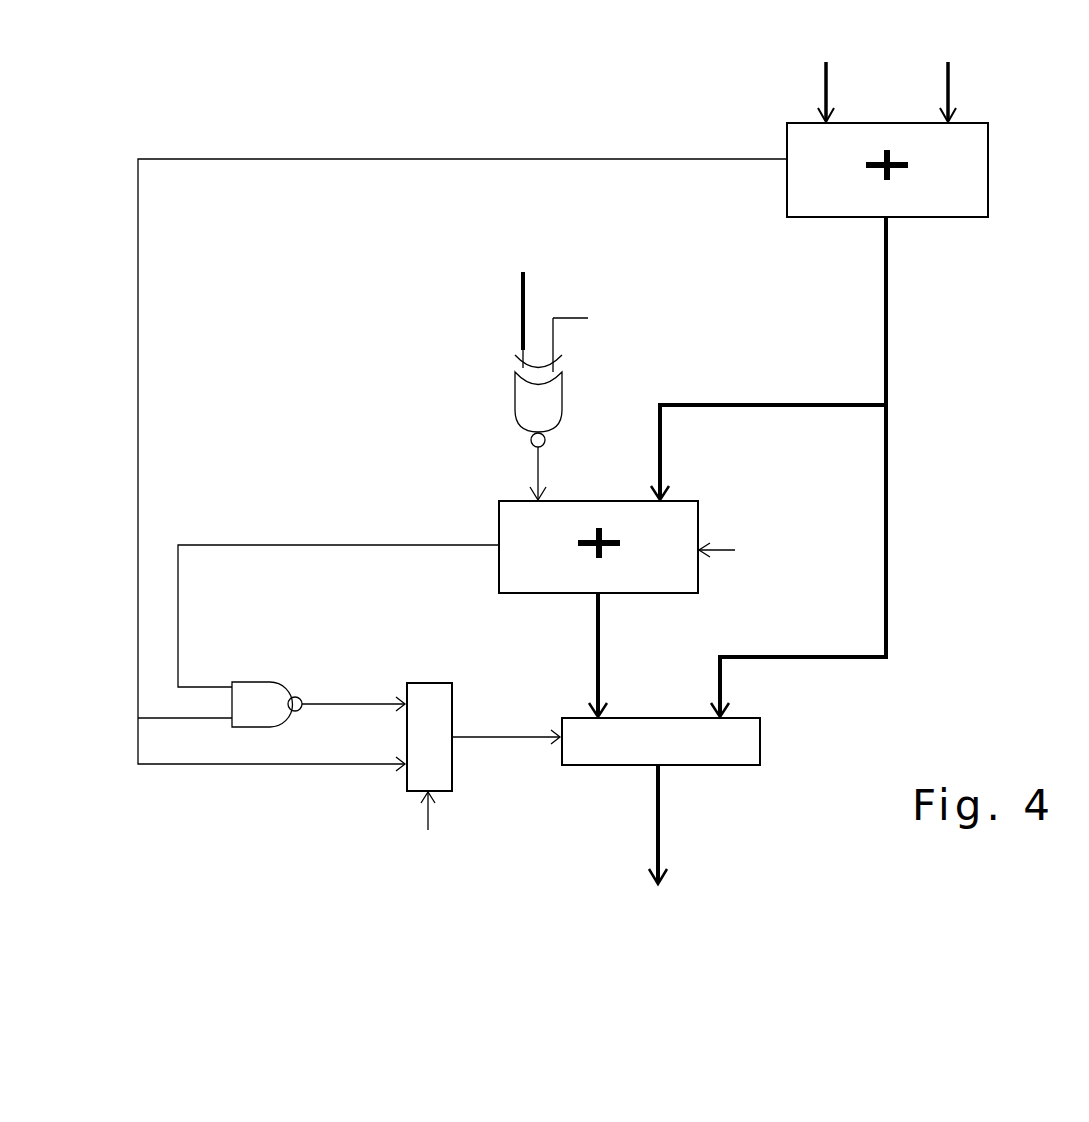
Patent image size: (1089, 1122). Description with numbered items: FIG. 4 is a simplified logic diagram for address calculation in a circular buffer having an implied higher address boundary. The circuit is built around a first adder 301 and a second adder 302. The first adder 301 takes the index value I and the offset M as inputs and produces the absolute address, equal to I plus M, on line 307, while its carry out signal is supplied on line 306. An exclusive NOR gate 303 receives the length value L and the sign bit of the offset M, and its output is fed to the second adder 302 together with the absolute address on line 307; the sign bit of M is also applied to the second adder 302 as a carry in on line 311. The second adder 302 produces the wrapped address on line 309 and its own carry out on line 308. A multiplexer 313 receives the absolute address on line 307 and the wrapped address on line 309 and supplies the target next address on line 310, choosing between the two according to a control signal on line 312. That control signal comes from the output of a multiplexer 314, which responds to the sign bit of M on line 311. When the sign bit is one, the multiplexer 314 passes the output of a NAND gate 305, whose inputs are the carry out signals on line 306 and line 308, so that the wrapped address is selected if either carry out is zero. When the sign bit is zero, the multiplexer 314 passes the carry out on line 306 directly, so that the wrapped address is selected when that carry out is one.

The first adder 301 is at (963, 217).
The second adder 302 is at (627, 501).
The exclusive NOR gate 303 is at (515, 410).
The NAND gate 305 is at (260, 682).
The line 306 is at (138, 338).
The line 307 is at (886, 325).
The line 308 is at (235, 545).
The line 309 is at (598, 650).
The line 310 is at (656, 838).
The line 311 is at (553, 333).
The line 312 is at (522, 735).
The multiplexer 313 is at (675, 717).
The multiplexer 314 is at (412, 683).